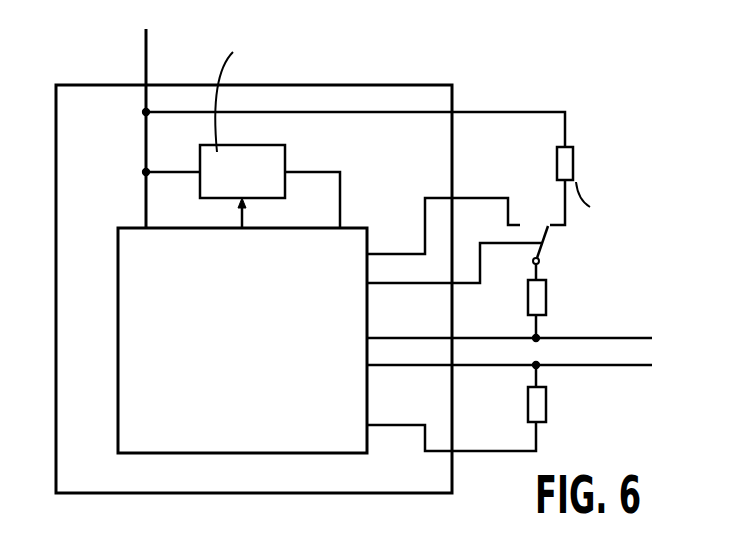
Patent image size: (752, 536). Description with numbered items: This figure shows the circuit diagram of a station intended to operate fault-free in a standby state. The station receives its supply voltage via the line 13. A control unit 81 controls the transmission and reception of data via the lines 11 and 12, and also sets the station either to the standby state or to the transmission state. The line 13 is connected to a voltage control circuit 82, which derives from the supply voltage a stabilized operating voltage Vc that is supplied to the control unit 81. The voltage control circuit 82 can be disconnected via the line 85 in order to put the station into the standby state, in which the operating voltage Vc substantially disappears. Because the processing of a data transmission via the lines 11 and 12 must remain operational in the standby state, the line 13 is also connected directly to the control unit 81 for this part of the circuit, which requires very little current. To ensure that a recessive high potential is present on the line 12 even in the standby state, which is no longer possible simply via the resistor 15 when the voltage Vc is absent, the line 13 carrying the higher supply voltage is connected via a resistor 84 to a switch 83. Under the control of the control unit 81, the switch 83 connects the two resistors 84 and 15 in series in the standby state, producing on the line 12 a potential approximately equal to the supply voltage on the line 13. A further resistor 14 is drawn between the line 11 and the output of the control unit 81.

The line 11 is at (590, 366).
The line 12 is at (617, 337).
The line 13 is at (143, 53).
The resistor 14 is at (546, 400).
The resistor 15 is at (548, 297).
The control unit 81 is at (118, 300).
The voltage control circuit 82 is at (255, 145).
The switch 83 is at (548, 240).
The resistor 84 is at (575, 160).
The line 85 is at (245, 222).